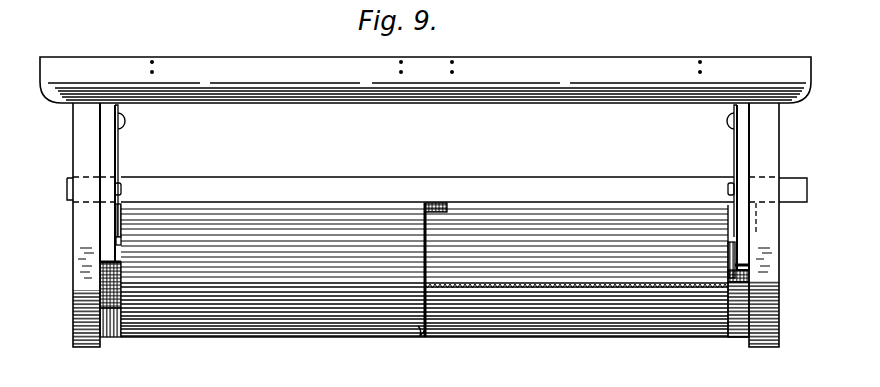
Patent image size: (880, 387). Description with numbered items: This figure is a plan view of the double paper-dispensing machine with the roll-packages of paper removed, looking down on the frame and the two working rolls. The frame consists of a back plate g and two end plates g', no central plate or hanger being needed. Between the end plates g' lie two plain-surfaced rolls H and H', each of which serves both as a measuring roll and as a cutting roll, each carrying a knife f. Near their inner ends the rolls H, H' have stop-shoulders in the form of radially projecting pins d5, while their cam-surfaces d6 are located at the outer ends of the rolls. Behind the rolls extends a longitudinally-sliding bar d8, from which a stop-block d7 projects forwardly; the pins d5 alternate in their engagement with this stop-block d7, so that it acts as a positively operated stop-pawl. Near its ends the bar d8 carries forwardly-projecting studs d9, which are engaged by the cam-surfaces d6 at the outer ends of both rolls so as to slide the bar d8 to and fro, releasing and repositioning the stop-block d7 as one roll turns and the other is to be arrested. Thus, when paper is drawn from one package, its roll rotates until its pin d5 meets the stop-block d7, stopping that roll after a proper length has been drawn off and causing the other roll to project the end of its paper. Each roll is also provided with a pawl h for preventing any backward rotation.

The back plate g is at (425, 80).
The end plates g' is at (426, 225).
The pawl h is at (111, 167).
The longitudinally-sliding bar d8 is at (437, 189).
The studs d9 is at (121, 207).
The pins d5 is at (397, 348).
The stop-block d7 is at (444, 201).
The cam-surfaces d6 is at (747, 335).
The plain-surfaced roll H is at (424, 273).
The plain-surfaced roll H' is at (626, 271).
The knife f is at (462, 284).